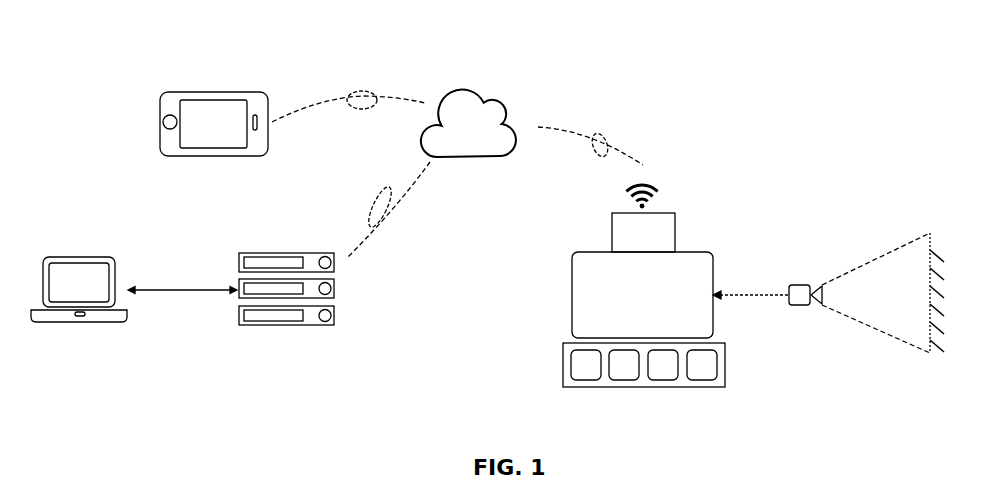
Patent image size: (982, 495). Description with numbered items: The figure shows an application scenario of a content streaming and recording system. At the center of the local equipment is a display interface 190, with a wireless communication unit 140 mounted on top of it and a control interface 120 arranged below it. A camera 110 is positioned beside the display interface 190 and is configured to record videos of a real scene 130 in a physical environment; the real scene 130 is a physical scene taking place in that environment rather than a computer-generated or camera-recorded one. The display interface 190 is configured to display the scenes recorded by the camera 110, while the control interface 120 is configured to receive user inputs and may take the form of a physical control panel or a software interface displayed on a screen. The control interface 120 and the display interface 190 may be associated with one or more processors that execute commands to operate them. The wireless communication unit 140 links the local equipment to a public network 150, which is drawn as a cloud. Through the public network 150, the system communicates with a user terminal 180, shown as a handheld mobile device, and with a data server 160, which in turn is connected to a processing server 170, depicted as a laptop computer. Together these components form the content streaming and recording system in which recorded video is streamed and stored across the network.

The camera 110 is at (799, 305).
The control interface 120 is at (568, 347).
The real scene 130 is at (927, 308).
The wireless communication unit 140 is at (618, 228).
The public network 150 is at (451, 100).
The data server 160 is at (308, 322).
The processing server 170 is at (100, 317).
The user terminal 180 is at (265, 156).
The display interface 190 is at (580, 320).